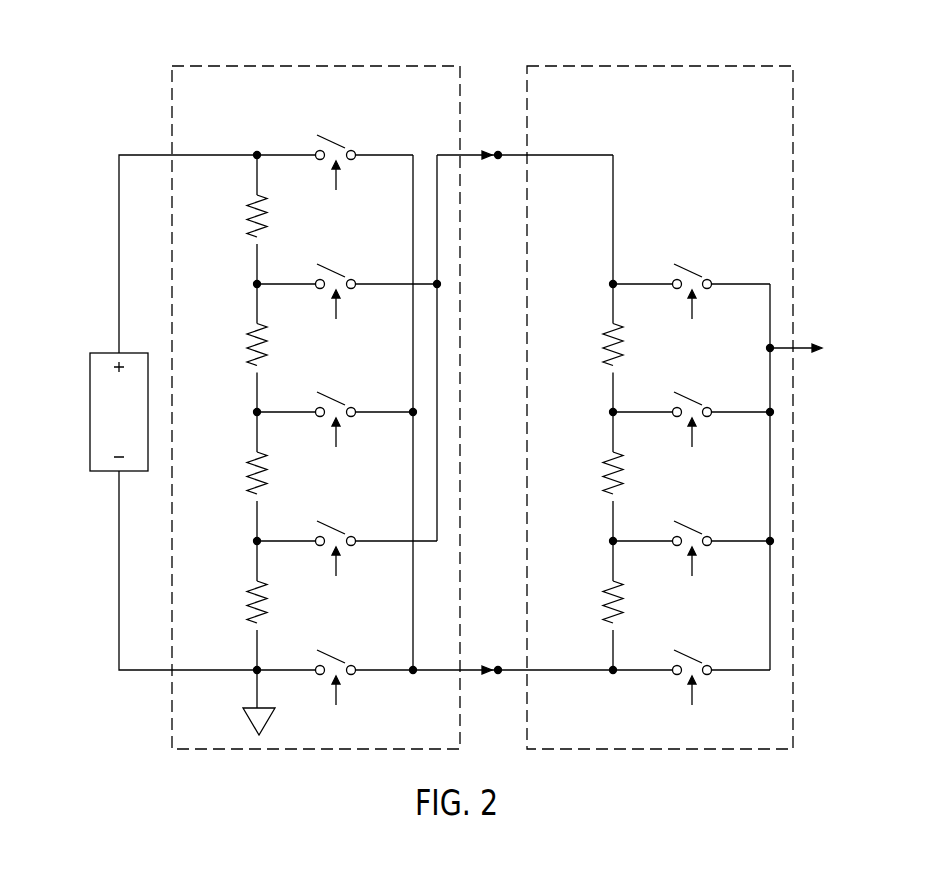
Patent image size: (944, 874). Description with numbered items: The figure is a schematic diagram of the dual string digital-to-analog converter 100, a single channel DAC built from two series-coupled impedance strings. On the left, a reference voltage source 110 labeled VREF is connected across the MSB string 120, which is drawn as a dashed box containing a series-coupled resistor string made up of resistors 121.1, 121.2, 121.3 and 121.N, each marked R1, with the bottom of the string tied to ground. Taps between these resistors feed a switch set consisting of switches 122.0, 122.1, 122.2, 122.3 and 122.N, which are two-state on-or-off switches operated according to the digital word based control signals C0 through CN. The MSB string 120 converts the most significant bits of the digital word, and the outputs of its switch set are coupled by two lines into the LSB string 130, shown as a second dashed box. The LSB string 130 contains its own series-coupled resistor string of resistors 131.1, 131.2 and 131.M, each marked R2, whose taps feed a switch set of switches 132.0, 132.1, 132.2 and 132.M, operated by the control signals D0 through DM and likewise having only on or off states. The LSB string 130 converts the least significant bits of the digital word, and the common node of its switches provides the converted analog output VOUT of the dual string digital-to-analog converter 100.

The dual string digital-to-analog converter 100 is at (156, 38).
The reference voltage source 110 is at (90, 412).
The MSB string 120 is at (314, 66).
The resistor 121.N is at (247, 215).
The resistor 121.3 is at (247, 343).
The resistor 121.2 is at (247, 472).
The resistor 121.1 is at (247, 601).
The switch 122.N is at (339, 145).
The switch 122.3 is at (339, 274).
The switch 122.2 is at (339, 402).
The switch 122.1 is at (339, 531).
The switch 122.0 is at (339, 660).
The LSB string 130 is at (660, 66).
The resistor 131.M is at (604, 343).
The resistor 131.2 is at (604, 472).
The resistor 131.1 is at (604, 601).
The switch 132.M is at (696, 274).
The switch 132.2 is at (696, 402).
The switch 132.1 is at (696, 531).
The switch 132.0 is at (696, 660).